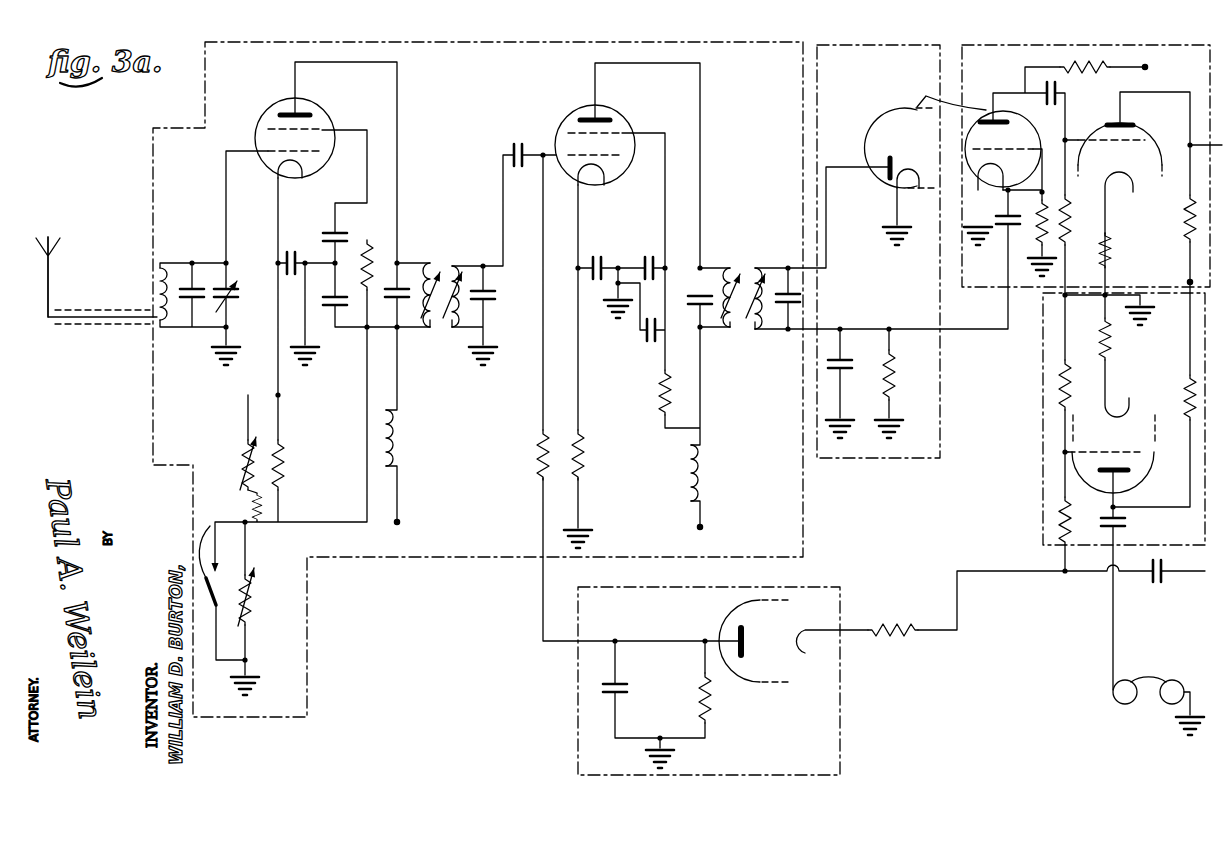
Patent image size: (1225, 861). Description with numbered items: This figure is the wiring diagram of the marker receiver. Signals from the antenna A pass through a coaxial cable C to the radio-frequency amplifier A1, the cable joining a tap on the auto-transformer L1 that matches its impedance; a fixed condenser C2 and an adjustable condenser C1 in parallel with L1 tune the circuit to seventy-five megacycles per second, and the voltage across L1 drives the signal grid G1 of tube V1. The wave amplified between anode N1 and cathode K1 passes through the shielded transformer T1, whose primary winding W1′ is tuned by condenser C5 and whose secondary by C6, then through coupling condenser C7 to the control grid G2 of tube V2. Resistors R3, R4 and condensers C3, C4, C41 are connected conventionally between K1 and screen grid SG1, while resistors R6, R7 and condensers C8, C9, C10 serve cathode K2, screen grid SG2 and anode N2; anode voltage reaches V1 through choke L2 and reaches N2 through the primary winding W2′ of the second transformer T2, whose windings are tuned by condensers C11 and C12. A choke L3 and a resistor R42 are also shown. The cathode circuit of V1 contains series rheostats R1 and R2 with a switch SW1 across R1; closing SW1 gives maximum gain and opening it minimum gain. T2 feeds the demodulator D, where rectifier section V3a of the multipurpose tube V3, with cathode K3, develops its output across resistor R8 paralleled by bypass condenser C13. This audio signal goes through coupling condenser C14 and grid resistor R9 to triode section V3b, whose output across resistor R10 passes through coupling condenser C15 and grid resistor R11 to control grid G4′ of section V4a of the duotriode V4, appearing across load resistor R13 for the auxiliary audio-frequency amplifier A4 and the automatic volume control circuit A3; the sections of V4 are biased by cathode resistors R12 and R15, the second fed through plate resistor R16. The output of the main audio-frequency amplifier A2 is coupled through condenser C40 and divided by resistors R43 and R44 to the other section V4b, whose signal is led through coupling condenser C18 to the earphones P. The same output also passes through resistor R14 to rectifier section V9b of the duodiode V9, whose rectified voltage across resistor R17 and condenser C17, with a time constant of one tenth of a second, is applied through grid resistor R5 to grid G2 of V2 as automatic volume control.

The antenna A is at (52, 252).
The coaxial cable C is at (102, 306).
The radio frequency auto-transformer L1 is at (164, 266).
The adjustable condenser C1 is at (234, 302).
The fixed condenser C2 is at (196, 307).
The radio-frequency amplifier tube V1 is at (306, 112).
The anode N1 is at (284, 112).
The screen grid SG1 is at (322, 129).
The signal grid G1 is at (262, 150).
The cathode K1 is at (300, 183).
The condenser C3 is at (286, 252).
The condenser C4 is at (334, 232).
The condenser C41 is at (329, 291).
The resistor R4 is at (369, 244).
The fixed condenser C5 is at (390, 304).
The shielded radio-frequency transformer T1 is at (447, 258).
The primary winding W1′ is at (425, 328).
The fixed condenser C6 is at (490, 301).
The choke L2 is at (400, 442).
The rheostat R2 is at (243, 452).
The resistor R3 is at (282, 448).
The resistor R42 is at (262, 516).
The switch SW1 is at (210, 555).
The rheostat R1 is at (249, 620).
The grid resistor R5 is at (543, 476).
The resistor R6 is at (582, 476).
The coupling condenser C7 is at (517, 170).
The radio-frequency amplifier tube V2 is at (580, 110).
The anode N2 is at (606, 116).
The screen grid SG2 is at (624, 132).
The control grid G2 is at (566, 153).
The cathode K2 is at (600, 190).
The condenser C8 is at (594, 256).
The condenser C9 is at (644, 256).
The condenser C10 is at (646, 341).
The fixed condenser C11 is at (683, 300).
The resistor R7 is at (653, 392).
The plate choke coil L3 is at (709, 473).
The second radio-frequency transformer T2 is at (740, 260).
The primary winding W2′ is at (728, 329).
The fixed condenser C12 is at (786, 305).
The radio-frequency amplifier A1 is at (679, 41).
The demodulator D is at (900, 43).
The rectifier section V3a is at (884, 112).
The multipurpose tube V3 is at (951, 93).
The cathode K3 is at (918, 170).
The radio frequency bypass condenser C13 is at (845, 370).
The resistor R8 is at (896, 366).
The audio-frequency amplifier A2 is at (1050, 43).
The triode section V3b is at (1041, 126).
The coupling condenser C14 is at (1004, 228).
The grid resistor R9 is at (1032, 228).
The coupling condenser C15 is at (1060, 88).
The output resistor R10 is at (1108, 71).
The grid resistor R11 is at (1080, 234).
The triode section V4a is at (1140, 116).
The control grid G4′ is at (1088, 141).
The duotriode V4 is at (1152, 182).
The cathode resistor R12 is at (1108, 260).
The load resistor R13 is at (1186, 236).
The cathode resistor R15 is at (1110, 350).
The plate resistor R16 is at (1186, 380).
The auxiliary audio-frequency amplifier A4 is at (1038, 471).
The resistor R43 is at (1060, 396).
The triode section V4b is at (1147, 480).
The coupling condenser C18 is at (1128, 528).
The resistor R44 is at (1060, 530).
The coupling condenser C40 is at (1152, 582).
The earphones P is at (1121, 704).
The automatic volume control circuit A3 is at (843, 586).
The duodiode V9 is at (776, 598).
The rectifier section V9b is at (760, 683).
The condenser C17 is at (622, 682).
The resistor R17 is at (710, 720).
The resistor R14 is at (910, 638).